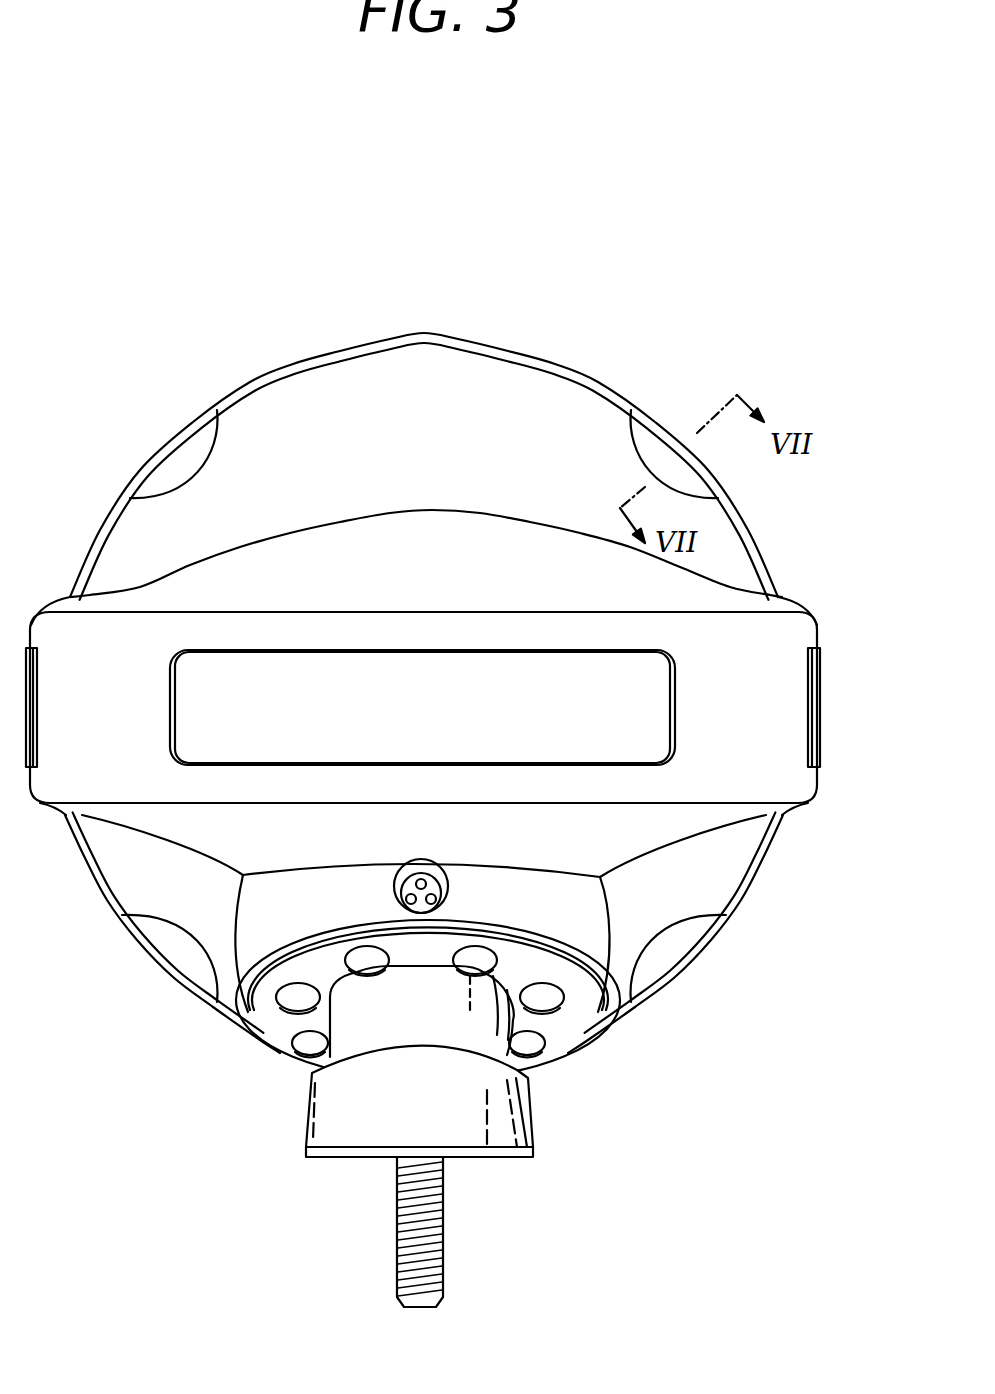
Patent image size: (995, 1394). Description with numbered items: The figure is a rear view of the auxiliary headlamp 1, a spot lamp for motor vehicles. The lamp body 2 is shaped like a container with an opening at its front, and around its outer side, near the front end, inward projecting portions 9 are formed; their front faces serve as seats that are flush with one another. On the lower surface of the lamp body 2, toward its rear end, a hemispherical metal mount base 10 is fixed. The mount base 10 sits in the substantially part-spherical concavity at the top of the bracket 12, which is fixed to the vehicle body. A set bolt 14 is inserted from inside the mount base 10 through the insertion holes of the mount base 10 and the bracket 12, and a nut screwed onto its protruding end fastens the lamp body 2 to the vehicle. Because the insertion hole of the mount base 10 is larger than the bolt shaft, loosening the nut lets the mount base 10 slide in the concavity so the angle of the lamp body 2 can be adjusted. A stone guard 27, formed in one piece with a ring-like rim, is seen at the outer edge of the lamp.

The auxiliary headlamp 1 is at (416, 283).
The lamp body 2 is at (499, 385).
The inward projecting portions 9 is at (180, 453).
The mount base 10 is at (350, 1015).
The bracket 12 is at (513, 1122).
The set bolt 14 is at (400, 1240).
The stone guard 27 is at (762, 548).